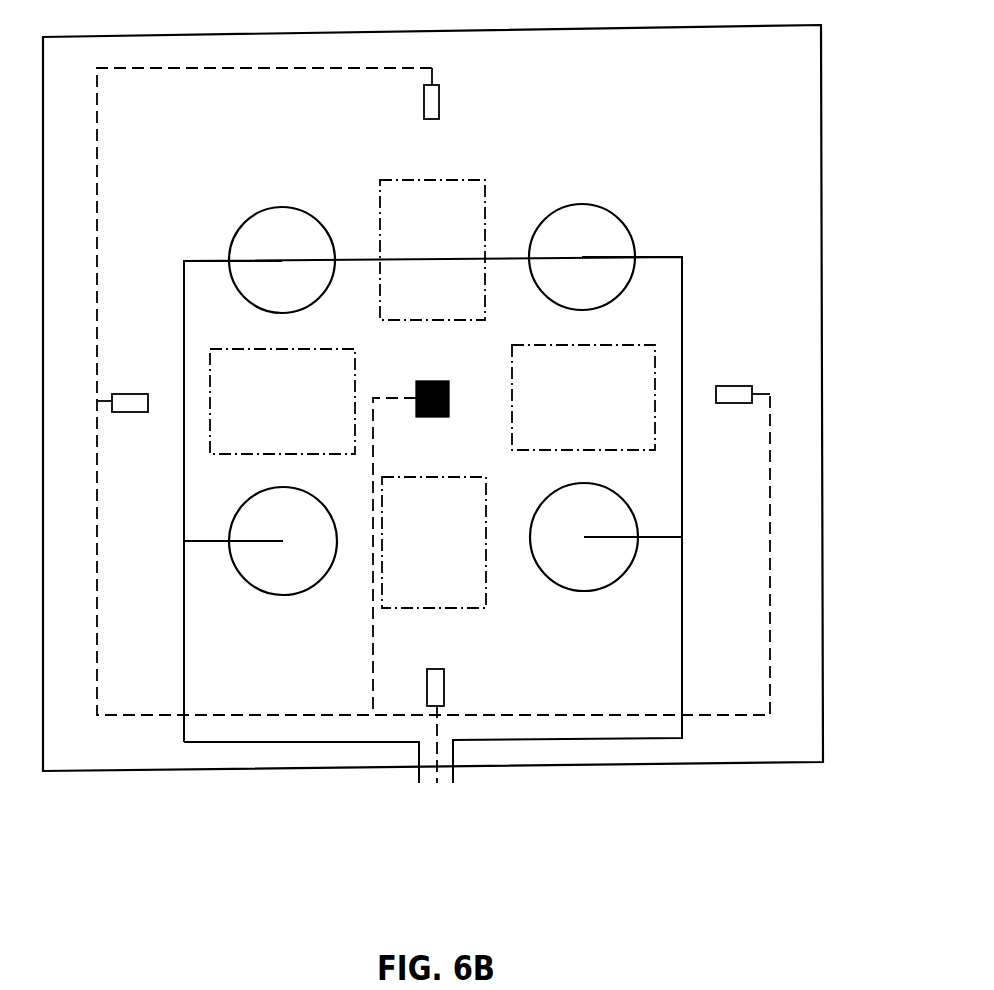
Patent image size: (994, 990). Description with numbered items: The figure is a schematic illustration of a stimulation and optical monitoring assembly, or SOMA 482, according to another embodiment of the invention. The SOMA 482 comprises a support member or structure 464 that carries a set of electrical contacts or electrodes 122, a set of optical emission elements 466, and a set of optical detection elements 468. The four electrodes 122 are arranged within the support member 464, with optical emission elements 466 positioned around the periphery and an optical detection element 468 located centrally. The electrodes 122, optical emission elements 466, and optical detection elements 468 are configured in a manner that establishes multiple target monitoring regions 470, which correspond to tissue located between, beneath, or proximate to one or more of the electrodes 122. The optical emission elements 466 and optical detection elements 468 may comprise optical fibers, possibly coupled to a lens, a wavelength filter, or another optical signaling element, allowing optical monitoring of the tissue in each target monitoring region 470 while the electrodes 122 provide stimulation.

The electrodes 122 is at (258, 233).
The support member 464 is at (206, 770).
The optical emission elements 466 is at (439, 96).
The optical detection elements 468 is at (431, 419).
The target monitoring regions 470 is at (411, 198).
The SOMA 482 is at (812, 841).